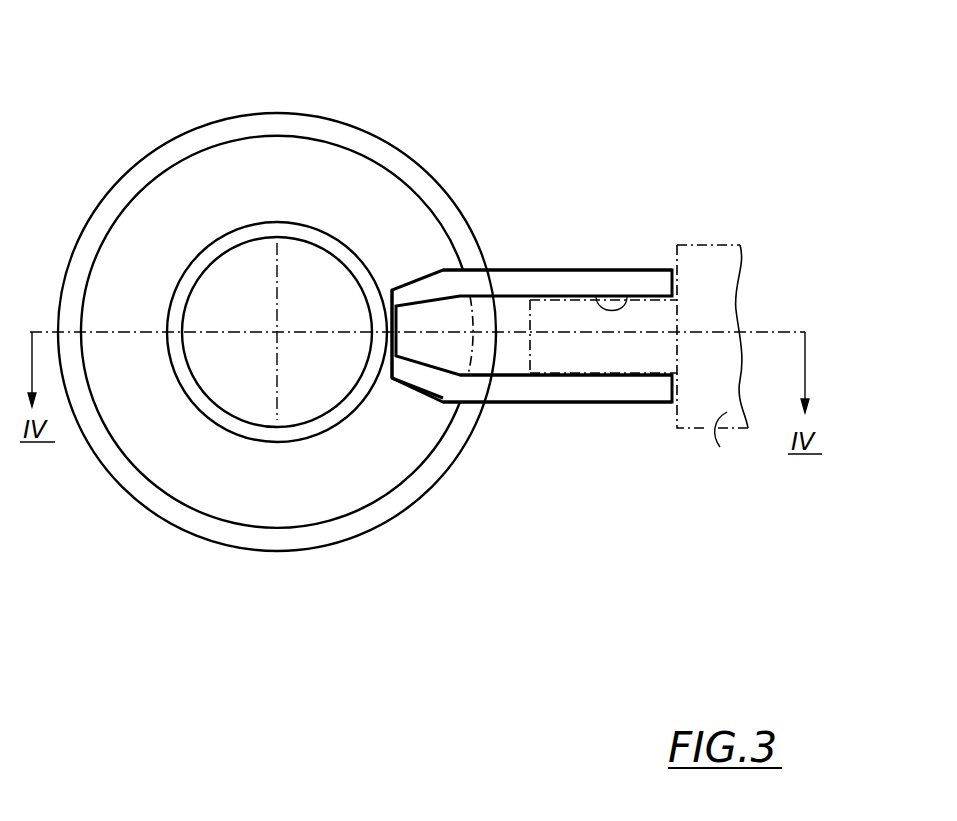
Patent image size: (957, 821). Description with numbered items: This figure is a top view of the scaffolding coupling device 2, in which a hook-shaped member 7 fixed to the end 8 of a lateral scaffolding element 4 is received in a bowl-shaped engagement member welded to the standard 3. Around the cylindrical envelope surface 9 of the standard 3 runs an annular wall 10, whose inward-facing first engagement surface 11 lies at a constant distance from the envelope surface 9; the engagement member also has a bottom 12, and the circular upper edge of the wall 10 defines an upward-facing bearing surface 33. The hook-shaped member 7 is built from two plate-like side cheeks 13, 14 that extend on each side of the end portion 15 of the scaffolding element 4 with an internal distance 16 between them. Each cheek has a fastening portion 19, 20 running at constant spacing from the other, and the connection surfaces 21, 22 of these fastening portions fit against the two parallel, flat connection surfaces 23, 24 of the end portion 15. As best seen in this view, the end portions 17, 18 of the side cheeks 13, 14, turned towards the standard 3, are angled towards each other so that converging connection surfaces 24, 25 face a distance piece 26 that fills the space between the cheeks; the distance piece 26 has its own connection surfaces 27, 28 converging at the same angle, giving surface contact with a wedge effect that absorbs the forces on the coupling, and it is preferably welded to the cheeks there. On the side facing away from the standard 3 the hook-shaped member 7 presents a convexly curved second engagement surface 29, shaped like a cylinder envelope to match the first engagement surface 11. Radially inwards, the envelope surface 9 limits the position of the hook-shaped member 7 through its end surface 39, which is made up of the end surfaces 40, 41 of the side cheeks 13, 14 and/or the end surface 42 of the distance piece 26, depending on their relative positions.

The coupling device 2 is at (101, 472).
The standard 3 is at (196, 419).
The lateral scaffolding element 4 is at (625, 318).
The hook-shaped member 7 is at (508, 416).
The end 8 is at (719, 447).
The envelope surface 9 is at (273, 221).
The annular wall 10 is at (138, 173).
The first engagement surface 11 is at (100, 250).
The bottom 12 is at (223, 180).
The side cheek 13 is at (640, 273).
The side cheek 14 is at (557, 416).
The end portion 15 is at (740, 268).
The distance 16 is at (527, 280).
The end portion 17 is at (468, 294).
The end portion 18 is at (422, 372).
The fastening portion 19 is at (617, 263).
The fastening portion 20 is at (567, 390).
The connection surface 21 is at (728, 238).
The connection surface 22 is at (577, 377).
The connection surface 23 is at (542, 298).
The connection surface 24 is at (484, 282).
The connection surface 25 is at (436, 396).
The distance piece 26 is at (484, 402).
The connection surface 27 is at (413, 305).
The connection surface 28 is at (392, 378).
The second engagement surface 29 is at (518, 290).
The bearing surface 33 is at (423, 376).
The end surface 39 is at (372, 312).
The end surface 40 is at (384, 316).
The end surface 41 is at (377, 362).
The end surface 42 is at (368, 350).